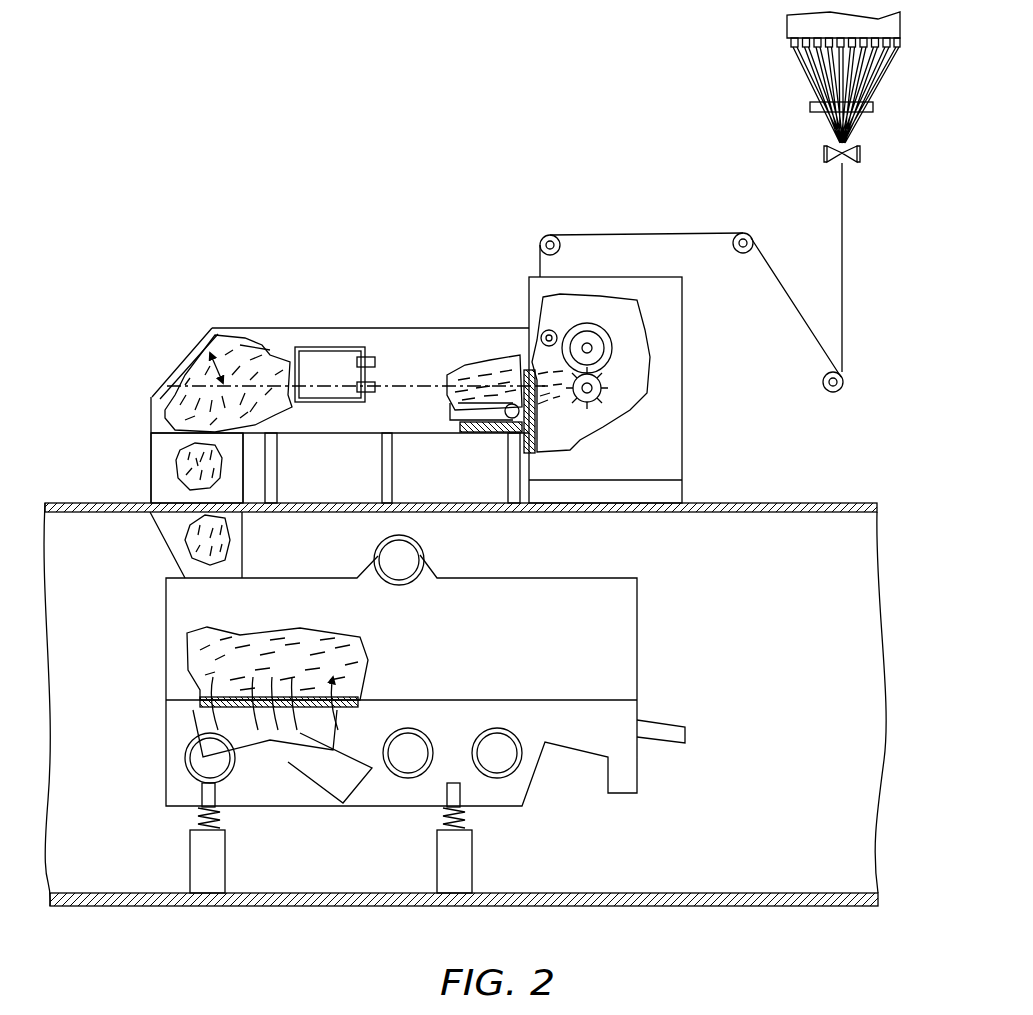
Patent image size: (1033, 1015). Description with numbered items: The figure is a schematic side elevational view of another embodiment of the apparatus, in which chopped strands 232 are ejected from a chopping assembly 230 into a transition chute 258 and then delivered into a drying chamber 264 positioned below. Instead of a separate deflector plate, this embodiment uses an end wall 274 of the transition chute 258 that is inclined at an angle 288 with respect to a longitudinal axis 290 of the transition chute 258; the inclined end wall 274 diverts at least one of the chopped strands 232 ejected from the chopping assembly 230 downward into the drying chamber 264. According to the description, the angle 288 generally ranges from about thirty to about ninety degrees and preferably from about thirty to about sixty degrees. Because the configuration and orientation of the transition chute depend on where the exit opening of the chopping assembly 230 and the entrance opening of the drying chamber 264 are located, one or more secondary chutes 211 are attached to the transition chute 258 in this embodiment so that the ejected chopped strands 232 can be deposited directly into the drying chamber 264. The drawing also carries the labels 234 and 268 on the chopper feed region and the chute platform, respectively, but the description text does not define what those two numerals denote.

The secondary chute 211 is at (150, 477).
The chopping assembly 230 is at (682, 293).
The chopped strands 232 is at (170, 422).
The material feed 234 is at (540, 356).
The transition chute 258 is at (227, 330).
The drying chamber 264 is at (166, 690).
The platform 268 is at (150, 431).
The end wall 274 is at (192, 357).
The angle 288 is at (258, 362).
The longitudinal axis 290 is at (400, 383).